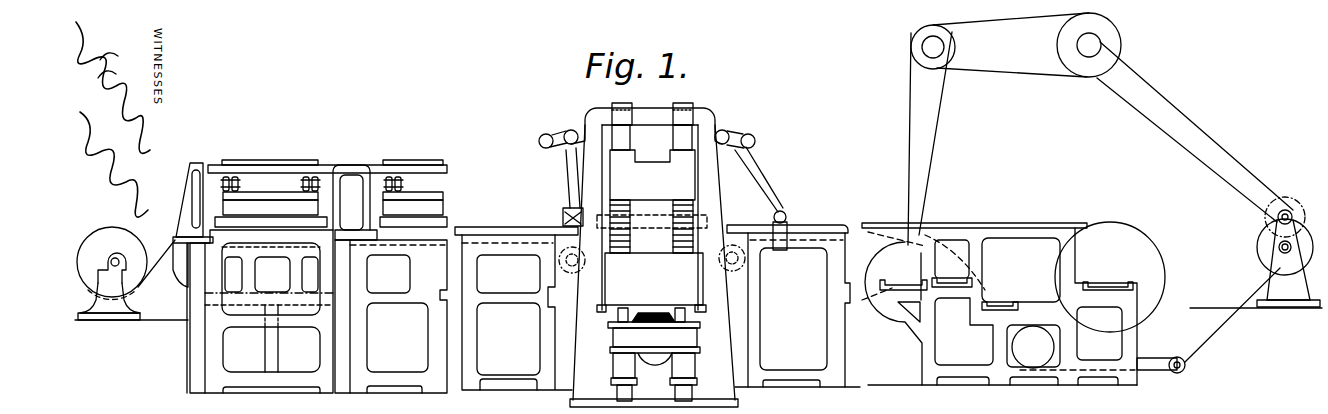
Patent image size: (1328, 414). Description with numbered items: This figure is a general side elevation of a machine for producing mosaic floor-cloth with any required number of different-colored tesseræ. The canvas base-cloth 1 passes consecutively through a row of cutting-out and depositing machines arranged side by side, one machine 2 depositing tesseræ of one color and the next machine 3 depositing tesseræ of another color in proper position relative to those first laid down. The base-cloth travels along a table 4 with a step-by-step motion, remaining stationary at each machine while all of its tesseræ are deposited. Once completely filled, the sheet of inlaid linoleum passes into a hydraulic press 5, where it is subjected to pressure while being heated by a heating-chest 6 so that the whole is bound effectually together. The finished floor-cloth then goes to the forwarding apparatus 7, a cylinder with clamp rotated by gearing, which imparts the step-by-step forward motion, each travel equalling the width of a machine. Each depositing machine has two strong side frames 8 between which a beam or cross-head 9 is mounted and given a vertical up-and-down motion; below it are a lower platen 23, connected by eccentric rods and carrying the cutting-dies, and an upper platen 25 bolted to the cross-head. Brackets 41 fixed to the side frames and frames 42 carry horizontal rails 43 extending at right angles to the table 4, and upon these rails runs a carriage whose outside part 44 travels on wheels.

The base-cloth 1 is at (165, 262).
The cutting-out and depositing machine 2 is at (270, 151).
The cutting-out and depositing machine 3 is at (413, 151).
The table 4 is at (496, 227).
The hydraulic press 5 is at (652, 175).
The heating-chest 6 is at (663, 232).
The forwarding apparatus 7 is at (1110, 277).
The side frames 8 is at (206, 290).
The cross-head 9 is at (295, 163).
The lower platen 23 is at (434, 207).
The upper platen 25 is at (226, 196).
The brackets 41 is at (196, 170).
The frames 42 is at (213, 362).
The horizontal rails 43 is at (195, 222).
The outside part of carriage 44 is at (232, 219).